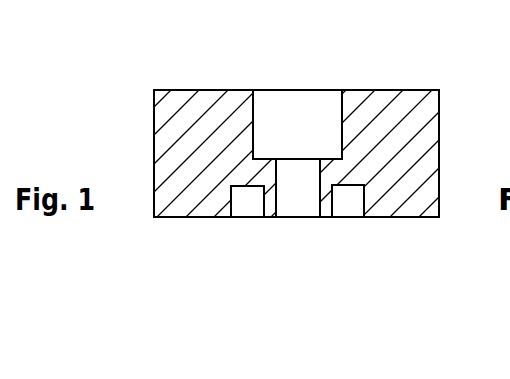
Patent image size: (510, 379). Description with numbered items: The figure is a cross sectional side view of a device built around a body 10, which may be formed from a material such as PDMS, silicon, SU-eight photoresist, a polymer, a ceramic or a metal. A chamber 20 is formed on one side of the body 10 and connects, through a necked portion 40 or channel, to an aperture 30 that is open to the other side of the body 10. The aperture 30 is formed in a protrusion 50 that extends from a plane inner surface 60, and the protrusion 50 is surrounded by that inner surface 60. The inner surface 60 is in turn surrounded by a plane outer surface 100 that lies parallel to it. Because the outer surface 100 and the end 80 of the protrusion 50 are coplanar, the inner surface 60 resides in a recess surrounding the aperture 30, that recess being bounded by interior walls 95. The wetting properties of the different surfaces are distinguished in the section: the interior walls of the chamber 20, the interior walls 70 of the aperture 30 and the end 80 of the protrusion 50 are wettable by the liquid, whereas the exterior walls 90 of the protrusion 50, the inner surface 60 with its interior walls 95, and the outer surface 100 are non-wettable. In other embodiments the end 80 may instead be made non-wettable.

The body 10 is at (410, 90).
The chamber 20 is at (280, 92).
The aperture 30 is at (310, 217).
The necked portion 40 is at (302, 175).
The protrusion 50 is at (265, 217).
The inner surface 60 is at (347, 186).
The interior walls of the aperture 70 is at (290, 217).
The end of the protrusion 80 is at (330, 217).
The exterior walls of the protrusion 90 is at (240, 217).
The interior walls 95 is at (212, 217).
The outer surface 100 is at (172, 217).